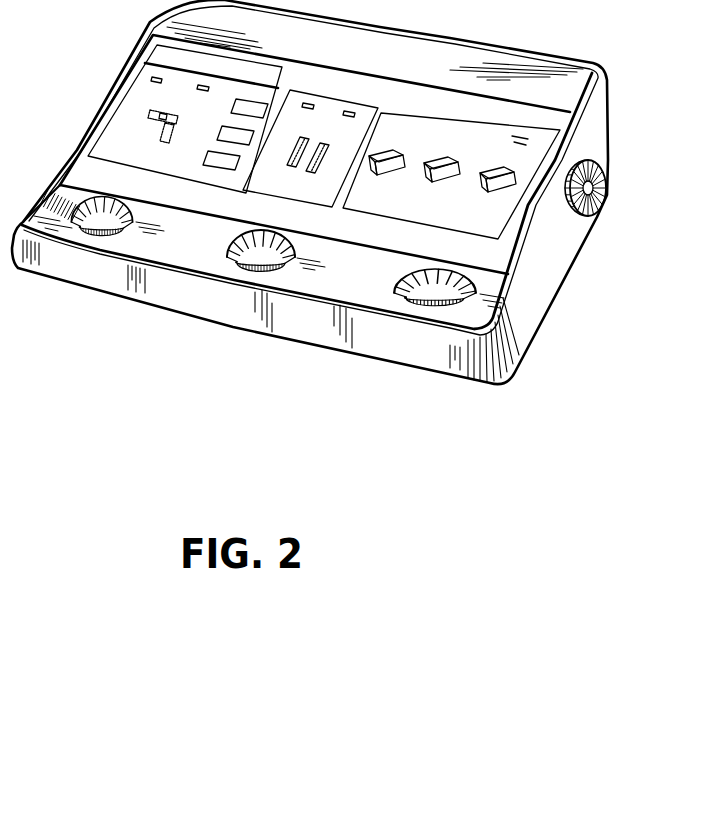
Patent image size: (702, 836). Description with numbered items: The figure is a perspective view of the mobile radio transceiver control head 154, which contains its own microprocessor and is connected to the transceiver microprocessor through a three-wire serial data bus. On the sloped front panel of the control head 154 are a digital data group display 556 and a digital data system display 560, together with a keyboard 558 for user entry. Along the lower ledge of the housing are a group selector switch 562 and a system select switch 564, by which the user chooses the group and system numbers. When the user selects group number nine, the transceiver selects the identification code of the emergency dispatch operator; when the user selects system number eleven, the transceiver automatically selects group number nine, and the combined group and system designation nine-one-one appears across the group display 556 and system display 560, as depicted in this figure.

The control head 154 is at (539, 341).
The digital data group display 556 is at (123, 117).
The keyboard 558 is at (257, 101).
The digital data system display 560 is at (334, 113).
The group selector switch 562 is at (88, 230).
The system select switch 564 is at (245, 266).